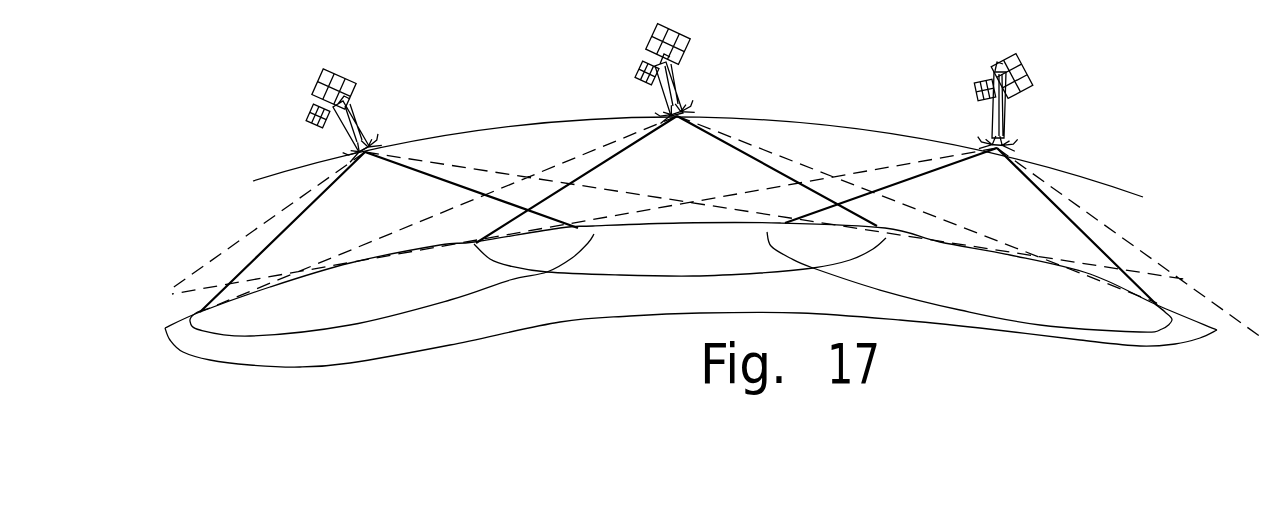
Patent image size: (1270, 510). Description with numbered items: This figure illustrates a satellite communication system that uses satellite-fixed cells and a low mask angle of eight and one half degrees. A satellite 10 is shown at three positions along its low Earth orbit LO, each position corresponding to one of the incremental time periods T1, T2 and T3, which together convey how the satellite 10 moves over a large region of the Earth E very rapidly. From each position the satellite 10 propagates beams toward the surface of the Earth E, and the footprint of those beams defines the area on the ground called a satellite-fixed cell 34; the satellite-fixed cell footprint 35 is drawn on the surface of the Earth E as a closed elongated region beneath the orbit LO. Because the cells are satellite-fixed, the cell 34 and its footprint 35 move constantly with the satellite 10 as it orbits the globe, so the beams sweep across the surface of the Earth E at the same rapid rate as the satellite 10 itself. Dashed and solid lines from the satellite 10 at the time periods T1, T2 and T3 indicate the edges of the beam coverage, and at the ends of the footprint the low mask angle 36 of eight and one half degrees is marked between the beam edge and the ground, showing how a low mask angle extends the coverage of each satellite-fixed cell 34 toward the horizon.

The satellite 10 is at (659, 83).
The satellite-fixed cell 34 is at (256, 253).
The satellite-fixed cell footprint 35 is at (470, 298).
The low mask angle 36 is at (380, 246).
The low Earth orbit LO is at (772, 118).
The Earth E is at (1143, 346).
The incremental time period T1 is at (1016, 96).
The incremental time period T2 is at (666, 64).
The incremental time period T3 is at (344, 103).